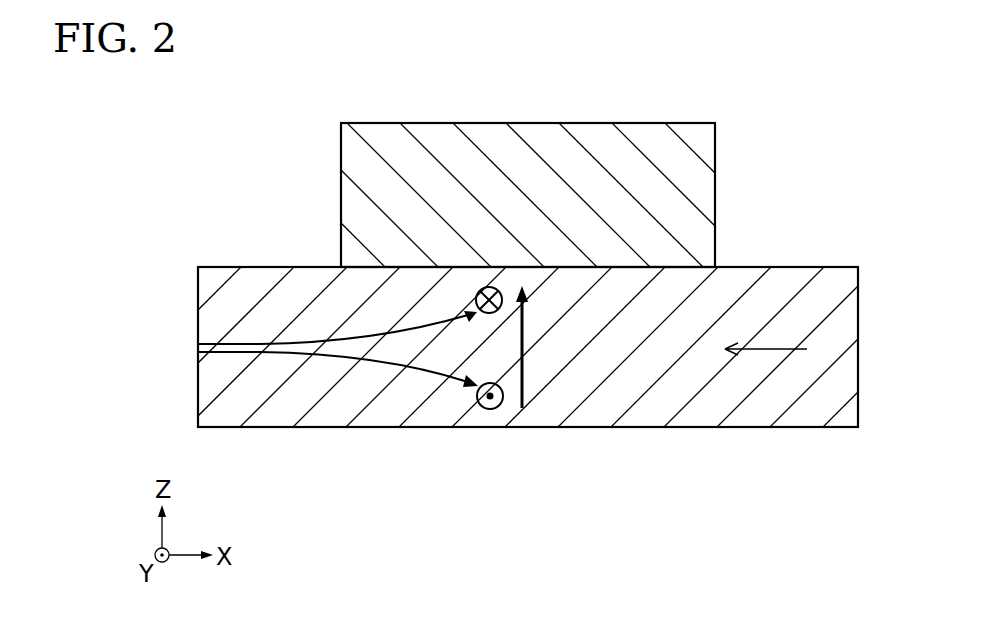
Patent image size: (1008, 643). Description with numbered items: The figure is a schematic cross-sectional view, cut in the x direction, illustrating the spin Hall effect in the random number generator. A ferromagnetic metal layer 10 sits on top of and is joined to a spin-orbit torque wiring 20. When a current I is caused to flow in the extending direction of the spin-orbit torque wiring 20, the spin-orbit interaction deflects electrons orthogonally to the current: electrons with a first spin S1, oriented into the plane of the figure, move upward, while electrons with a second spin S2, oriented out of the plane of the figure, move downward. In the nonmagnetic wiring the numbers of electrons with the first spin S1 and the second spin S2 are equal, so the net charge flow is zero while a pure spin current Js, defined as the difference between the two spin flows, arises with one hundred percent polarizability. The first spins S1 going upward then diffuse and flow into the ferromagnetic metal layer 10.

The ferromagnetic metal layer 10 is at (693, 152).
The spin-orbit torque wiring 20 is at (760, 296).
The first spin S1 is at (419, 332).
The second spin S2 is at (416, 356).
The spin current Js is at (532, 365).
The current I is at (767, 350).